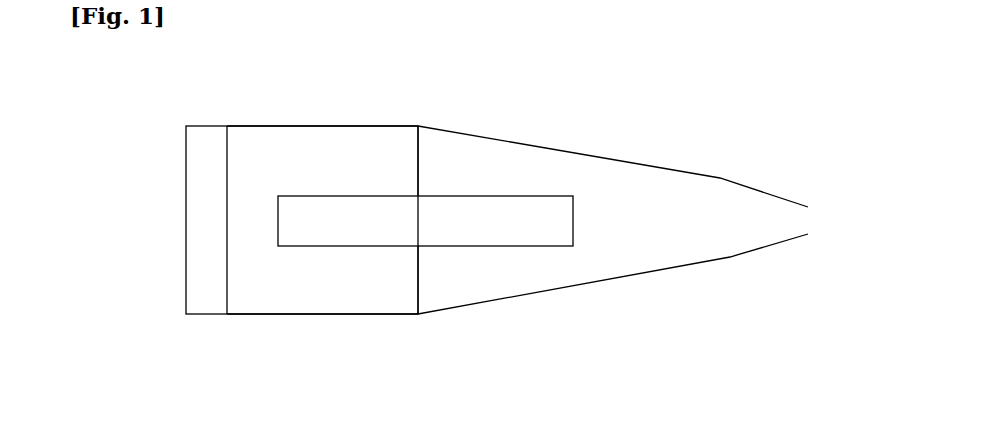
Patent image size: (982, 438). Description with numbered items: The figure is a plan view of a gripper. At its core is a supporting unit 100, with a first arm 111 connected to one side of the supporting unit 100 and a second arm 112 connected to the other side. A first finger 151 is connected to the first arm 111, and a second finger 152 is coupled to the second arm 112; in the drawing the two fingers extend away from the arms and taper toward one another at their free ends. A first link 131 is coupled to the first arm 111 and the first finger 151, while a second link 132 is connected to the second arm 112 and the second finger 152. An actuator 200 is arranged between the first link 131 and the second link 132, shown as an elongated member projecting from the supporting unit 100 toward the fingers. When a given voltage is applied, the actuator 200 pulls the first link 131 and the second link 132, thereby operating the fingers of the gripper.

The supporting unit 100 is at (200, 237).
The first arm 111 is at (370, 126).
The second arm 112 is at (370, 314).
The first link 131 is at (418, 161).
The second link 132 is at (418, 280).
The first finger 151 is at (544, 146).
The second finger 152 is at (544, 293).
The actuator 200 is at (318, 217).